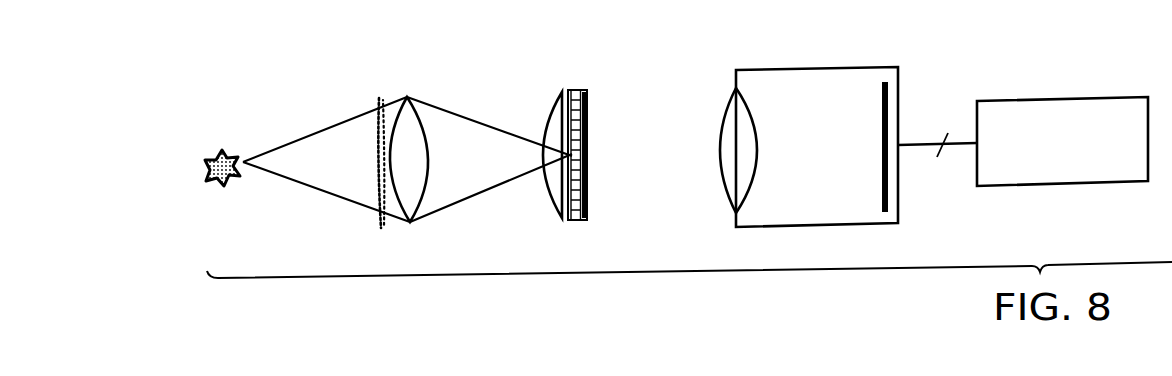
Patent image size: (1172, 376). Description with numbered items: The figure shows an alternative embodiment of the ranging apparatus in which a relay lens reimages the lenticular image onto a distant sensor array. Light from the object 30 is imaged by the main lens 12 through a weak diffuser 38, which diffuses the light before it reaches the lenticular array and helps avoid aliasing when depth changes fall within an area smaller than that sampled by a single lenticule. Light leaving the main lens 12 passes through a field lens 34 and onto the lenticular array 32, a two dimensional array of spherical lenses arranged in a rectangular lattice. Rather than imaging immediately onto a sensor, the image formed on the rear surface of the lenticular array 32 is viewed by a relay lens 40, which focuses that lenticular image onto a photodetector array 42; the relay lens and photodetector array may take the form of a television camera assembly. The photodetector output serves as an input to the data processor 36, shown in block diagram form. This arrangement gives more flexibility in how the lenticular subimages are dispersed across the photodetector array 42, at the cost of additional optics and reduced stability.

The object 30 is at (230, 150).
The main lens 12 is at (408, 117).
The diffuser 38 is at (379, 223).
The field lens 34 is at (553, 101).
The lenticular array 32 is at (581, 92).
The relay lens 40 is at (726, 121).
The photodetector array 42 is at (878, 92).
The data processor 36 is at (1055, 186).